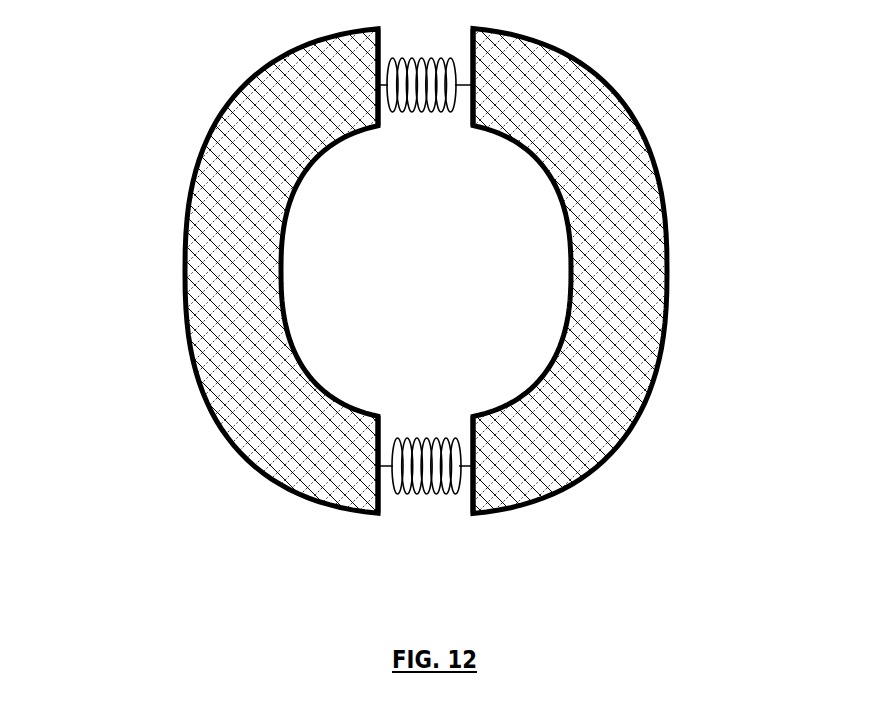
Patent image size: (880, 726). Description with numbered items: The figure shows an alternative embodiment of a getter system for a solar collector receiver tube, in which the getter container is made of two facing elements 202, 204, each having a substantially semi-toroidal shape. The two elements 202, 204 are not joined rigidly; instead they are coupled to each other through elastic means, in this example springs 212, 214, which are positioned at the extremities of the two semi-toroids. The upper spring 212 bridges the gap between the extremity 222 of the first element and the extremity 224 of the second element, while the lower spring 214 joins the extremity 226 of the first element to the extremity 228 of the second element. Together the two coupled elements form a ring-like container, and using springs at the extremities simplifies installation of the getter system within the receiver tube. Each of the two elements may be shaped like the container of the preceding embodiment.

The container element 202 is at (114, 275).
The container element 204 is at (706, 217).
The spring 212 is at (437, 165).
The spring 214 is at (414, 380).
The extremity 222 is at (322, 65).
The extremity 224 is at (520, 51).
The extremity 226 is at (273, 455).
The extremity 228 is at (525, 451).